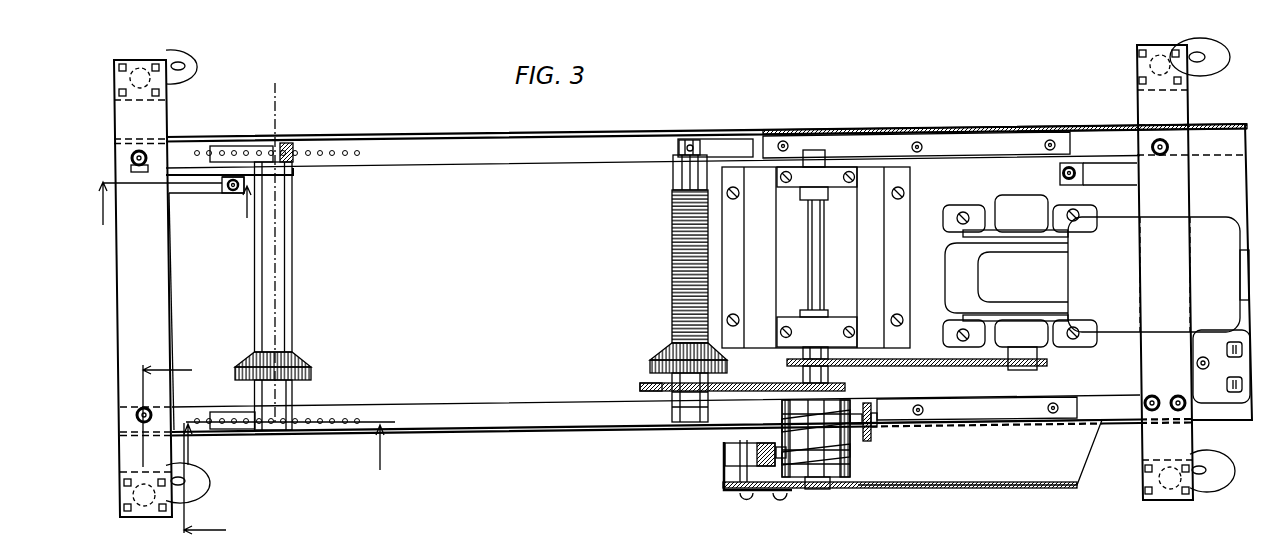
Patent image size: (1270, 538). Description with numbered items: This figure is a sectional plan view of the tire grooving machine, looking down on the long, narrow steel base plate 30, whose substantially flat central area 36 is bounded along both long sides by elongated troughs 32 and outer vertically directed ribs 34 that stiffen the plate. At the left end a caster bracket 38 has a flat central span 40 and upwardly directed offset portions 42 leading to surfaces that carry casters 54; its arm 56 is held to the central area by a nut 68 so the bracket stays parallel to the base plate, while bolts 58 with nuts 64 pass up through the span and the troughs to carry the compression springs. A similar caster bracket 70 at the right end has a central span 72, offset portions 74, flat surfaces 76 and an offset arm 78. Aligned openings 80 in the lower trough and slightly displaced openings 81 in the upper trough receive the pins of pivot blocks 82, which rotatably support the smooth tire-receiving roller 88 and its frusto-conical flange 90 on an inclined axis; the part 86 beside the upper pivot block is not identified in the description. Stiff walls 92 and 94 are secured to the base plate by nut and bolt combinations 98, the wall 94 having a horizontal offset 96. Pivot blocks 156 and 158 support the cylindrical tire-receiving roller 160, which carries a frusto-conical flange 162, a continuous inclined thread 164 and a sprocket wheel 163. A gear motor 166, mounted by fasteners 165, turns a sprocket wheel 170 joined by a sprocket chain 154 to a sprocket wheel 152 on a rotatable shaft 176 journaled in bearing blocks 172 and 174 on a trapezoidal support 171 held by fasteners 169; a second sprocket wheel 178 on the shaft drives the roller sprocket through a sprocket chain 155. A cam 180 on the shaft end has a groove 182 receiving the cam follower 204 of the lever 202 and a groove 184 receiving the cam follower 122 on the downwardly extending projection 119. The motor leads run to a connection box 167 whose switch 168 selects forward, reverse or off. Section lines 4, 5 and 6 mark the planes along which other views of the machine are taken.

The section line 4- 4 is at (289, 456).
The section line 5- 5 is at (190, 449).
The section line 6- 6 is at (172, 216).
The base plate 30 is at (564, 121).
The elongated trough 32 is at (484, 164).
The vertically directed rib 34 is at (432, 136).
The central area 36 is at (510, 295).
The caster bracket 38 is at (143, 288).
The central span 40 is at (170, 330).
The upwardly directed offset portion 42 is at (162, 147).
The caster 54 is at (197, 77).
The arm 56 is at (192, 195).
The bolt 58 is at (140, 173).
The nut 64 is at (128, 158).
The nut 68 is at (228, 191).
The caster bracket 70 is at (1191, 272).
The central span 72 is at (1184, 190).
The upwardly directed offset portion 74 is at (1188, 141).
The flat surface 76 is at (651, 280).
The offset arm 78 is at (1103, 170).
The opening 80 is at (357, 413).
The opening 81 is at (353, 160).
The pivot block 82 is at (242, 146).
The clamp block 86 is at (282, 150).
The tire-receiving roller 88 is at (285, 250).
The frusto-conical flange 90 is at (300, 363).
The plate 92 is at (970, 127).
The plate 94 is at (997, 488).
The horizontal offset 96 is at (980, 452).
The nut and bolt combination 98 is at (788, 143).
The downwardly extending projection 119 is at (875, 440).
The cam follower 122 is at (855, 432).
The sprocket wheel 152 is at (832, 376).
The sprocket chain 154 is at (928, 366).
The sprocket chain 155 is at (747, 385).
The pivot block 156 is at (710, 416).
The pivot block 158 is at (722, 145).
The tire-receiving roller 160 is at (670, 180).
The frusto-conical flange 162 is at (667, 350).
The sprocket wheel 163 is at (648, 383).
The continuous thread 164 is at (672, 256).
The fastener 165 is at (965, 214).
The gear motor 166 is at (1097, 274).
The connection box 167 is at (1223, 383).
The switch 168 is at (1207, 358).
The fastener 169 is at (733, 316).
The sprocket wheel 170 is at (1037, 367).
The trapezoidal support 171 is at (843, 203).
The bearing block 172 is at (817, 328).
The bearing block 174 is at (817, 175).
The rotatable shaft 176 is at (810, 248).
The second sprocket wheel 178 is at (803, 379).
The cam 180 is at (853, 470).
The groove 182 is at (811, 490).
The groove 184 is at (840, 412).
The lever 202 is at (733, 458).
The cam follower 204 is at (782, 462).